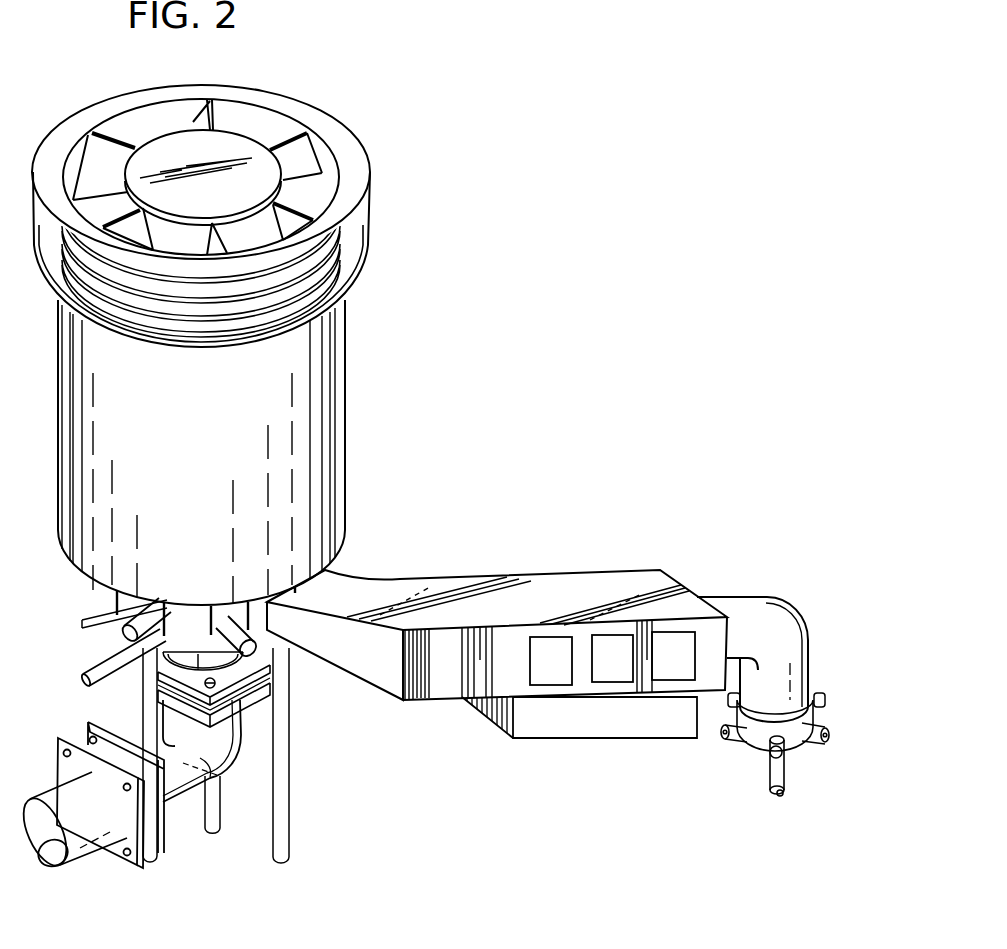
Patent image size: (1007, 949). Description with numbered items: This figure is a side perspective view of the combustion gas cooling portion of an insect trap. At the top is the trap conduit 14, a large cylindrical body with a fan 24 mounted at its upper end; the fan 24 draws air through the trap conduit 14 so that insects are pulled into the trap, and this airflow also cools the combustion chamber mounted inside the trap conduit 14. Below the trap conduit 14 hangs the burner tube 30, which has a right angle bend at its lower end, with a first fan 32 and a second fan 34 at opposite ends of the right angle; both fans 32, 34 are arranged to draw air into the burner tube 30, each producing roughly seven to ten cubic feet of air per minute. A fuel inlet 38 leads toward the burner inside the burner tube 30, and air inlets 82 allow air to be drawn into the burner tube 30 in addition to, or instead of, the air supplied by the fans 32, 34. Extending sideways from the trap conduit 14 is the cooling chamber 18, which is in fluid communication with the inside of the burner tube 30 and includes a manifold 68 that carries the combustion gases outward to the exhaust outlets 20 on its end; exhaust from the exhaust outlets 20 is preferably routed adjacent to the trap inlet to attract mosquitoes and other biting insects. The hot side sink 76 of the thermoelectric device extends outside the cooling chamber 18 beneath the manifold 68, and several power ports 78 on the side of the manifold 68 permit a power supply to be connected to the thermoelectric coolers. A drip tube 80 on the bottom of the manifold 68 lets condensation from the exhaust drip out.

The trap conduit 14 is at (347, 384).
The cooling chamber 18 is at (737, 596).
The exhaust outlets 20 is at (825, 703).
The fan 24 is at (363, 188).
The burner tube 30 is at (200, 760).
The first fan 32 is at (256, 697).
The second fan 34 is at (87, 737).
The fuel inlet 38 is at (100, 668).
The manifold 68 is at (462, 580).
The hot side sink 76 is at (552, 725).
The power ports 78 is at (562, 677).
The drip tube 80 is at (768, 748).
The air inlets 82 is at (123, 633).